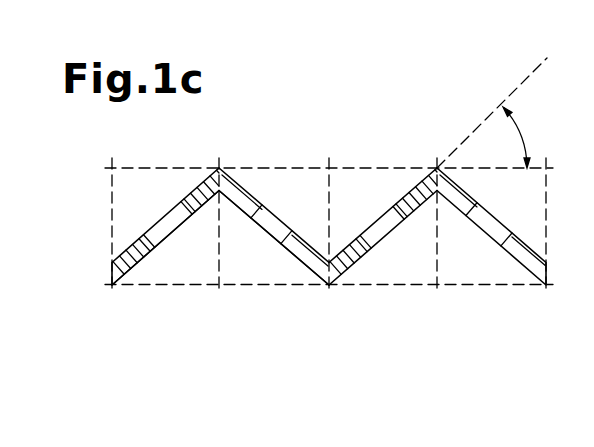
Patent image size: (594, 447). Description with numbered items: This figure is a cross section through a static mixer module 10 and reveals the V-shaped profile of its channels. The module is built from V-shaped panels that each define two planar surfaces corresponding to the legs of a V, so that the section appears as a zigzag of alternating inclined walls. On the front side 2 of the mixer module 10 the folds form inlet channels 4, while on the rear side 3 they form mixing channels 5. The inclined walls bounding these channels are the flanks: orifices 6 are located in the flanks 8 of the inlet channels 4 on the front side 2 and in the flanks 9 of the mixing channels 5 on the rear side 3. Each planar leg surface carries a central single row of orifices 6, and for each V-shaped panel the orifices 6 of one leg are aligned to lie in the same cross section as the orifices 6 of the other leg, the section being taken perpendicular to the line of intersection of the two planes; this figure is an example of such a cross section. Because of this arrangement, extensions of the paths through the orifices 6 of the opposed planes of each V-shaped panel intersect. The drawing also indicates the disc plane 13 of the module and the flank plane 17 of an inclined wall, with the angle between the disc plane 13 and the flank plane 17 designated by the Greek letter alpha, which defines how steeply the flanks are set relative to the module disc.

The front side 2 is at (273, 147).
The rear side 3 is at (487, 310).
The inlet channels 4 is at (125, 215).
The mixing channels 5 is at (208, 242).
The orifices 6 is at (385, 237).
The flanks of the inlet channels 8 is at (420, 177).
The flanks of the mixing channels 9 is at (302, 262).
The mixer module 10 is at (306, 132).
The disc plane 13 is at (368, 163).
The flank plane 17 is at (492, 113).